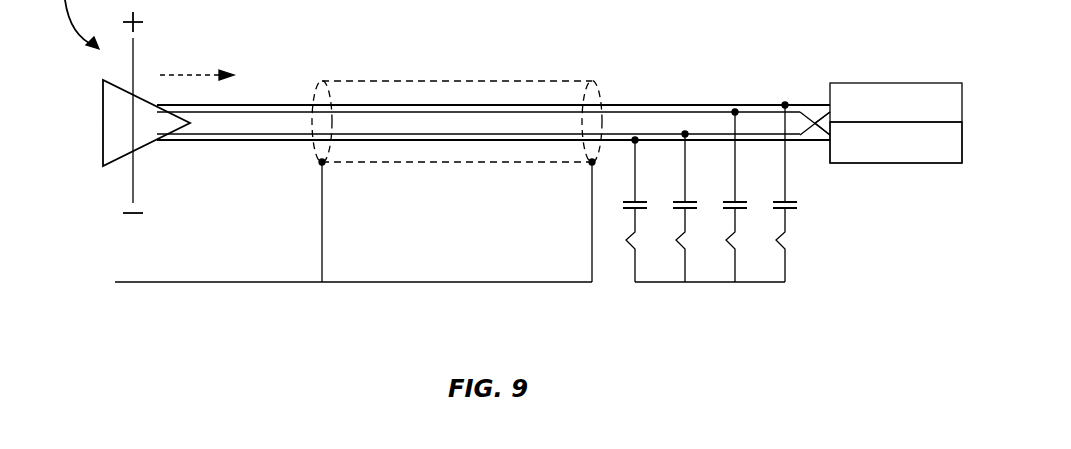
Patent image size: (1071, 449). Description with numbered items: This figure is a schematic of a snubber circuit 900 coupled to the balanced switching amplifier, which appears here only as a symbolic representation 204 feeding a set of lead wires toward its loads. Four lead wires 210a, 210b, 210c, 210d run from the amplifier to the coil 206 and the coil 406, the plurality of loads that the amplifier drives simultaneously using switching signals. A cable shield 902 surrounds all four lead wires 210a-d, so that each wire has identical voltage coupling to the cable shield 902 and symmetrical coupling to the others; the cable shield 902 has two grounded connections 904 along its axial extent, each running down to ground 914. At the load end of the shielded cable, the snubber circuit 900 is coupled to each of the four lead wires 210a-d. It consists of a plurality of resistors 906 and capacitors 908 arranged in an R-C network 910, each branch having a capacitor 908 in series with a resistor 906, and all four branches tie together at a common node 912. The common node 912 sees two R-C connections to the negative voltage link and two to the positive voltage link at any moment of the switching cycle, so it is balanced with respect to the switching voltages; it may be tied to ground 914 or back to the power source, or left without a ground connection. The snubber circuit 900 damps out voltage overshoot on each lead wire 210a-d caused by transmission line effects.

The symbolic representation 204 is at (181, 72).
The lead wire 210a is at (643, 104).
The lead wire 210b is at (678, 110).
The lead wire 210c is at (798, 143).
The lead wire 210d is at (802, 130).
The cable shield 902 is at (474, 81).
The coil 206 is at (916, 116).
The coil 406 is at (916, 159).
The capacitors 908 is at (641, 201).
The resistors 906 is at (637, 249).
The common node 912 is at (727, 282).
The ground 914 is at (428, 282).
The grounded connections 904 is at (322, 293).
The R-C network 910 is at (618, 223).
The snubber circuit 900 is at (807, 223).